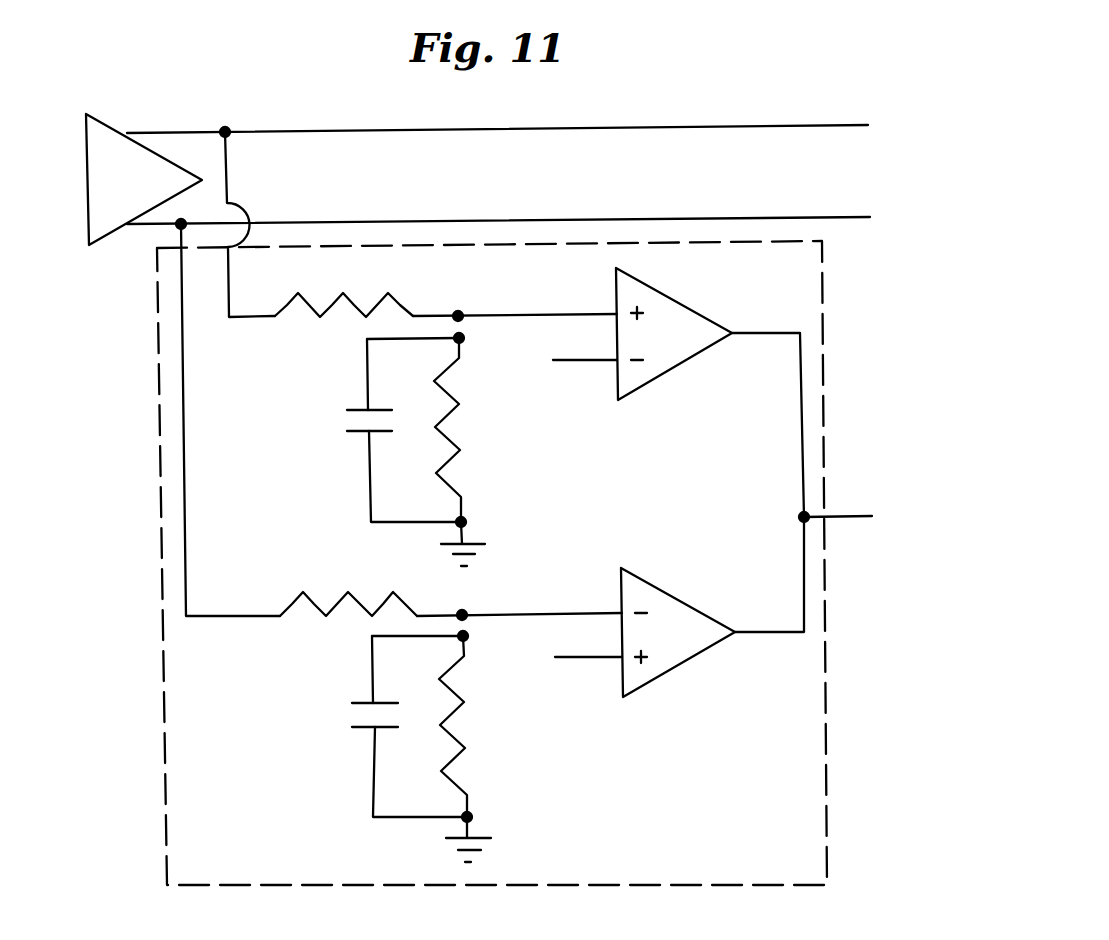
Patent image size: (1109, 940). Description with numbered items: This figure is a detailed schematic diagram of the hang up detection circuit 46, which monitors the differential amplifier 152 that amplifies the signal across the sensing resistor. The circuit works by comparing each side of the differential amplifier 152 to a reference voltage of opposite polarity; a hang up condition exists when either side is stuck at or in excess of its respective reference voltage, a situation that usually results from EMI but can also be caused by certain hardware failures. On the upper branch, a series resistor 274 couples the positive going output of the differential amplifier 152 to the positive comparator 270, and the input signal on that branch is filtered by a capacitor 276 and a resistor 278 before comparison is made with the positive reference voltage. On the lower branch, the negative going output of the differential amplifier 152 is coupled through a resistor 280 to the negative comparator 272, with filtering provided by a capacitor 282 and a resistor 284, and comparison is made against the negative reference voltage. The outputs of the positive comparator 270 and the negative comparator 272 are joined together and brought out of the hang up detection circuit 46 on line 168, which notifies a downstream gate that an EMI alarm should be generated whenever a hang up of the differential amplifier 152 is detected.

The differential amplifier 152 is at (103, 241).
The hang up detection circuit 46 is at (163, 576).
The series resistor 274 is at (302, 296).
The capacitor 276 is at (357, 410).
The resistor 278 is at (446, 430).
The positive comparator 270 is at (690, 307).
The resistor 280 is at (338, 604).
The capacitor 282 is at (362, 703).
The resistor 284 is at (455, 722).
The negative comparator 272 is at (673, 592).
The line 168 is at (843, 514).